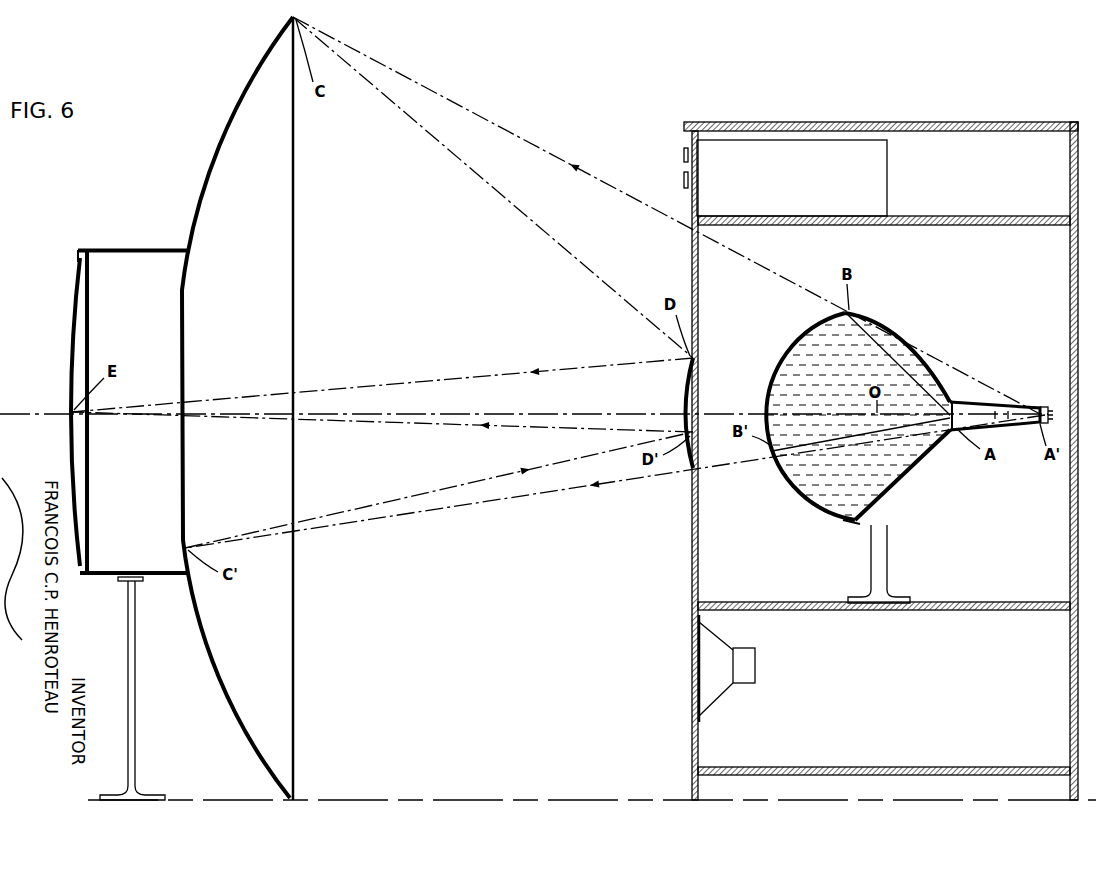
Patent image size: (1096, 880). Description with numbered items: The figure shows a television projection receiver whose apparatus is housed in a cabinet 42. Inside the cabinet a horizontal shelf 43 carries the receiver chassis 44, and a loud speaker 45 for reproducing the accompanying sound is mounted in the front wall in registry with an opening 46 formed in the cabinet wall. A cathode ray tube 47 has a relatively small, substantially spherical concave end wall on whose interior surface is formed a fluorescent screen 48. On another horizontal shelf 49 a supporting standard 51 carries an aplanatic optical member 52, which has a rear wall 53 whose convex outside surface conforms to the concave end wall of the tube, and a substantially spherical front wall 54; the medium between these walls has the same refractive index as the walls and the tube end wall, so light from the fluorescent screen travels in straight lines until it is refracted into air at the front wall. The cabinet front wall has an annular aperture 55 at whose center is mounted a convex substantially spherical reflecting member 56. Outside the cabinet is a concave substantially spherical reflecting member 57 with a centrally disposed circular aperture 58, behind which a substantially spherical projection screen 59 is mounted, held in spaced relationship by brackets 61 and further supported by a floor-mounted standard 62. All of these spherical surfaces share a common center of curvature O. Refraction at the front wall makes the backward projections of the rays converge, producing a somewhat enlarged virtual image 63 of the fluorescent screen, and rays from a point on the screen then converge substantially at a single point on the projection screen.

The cabinet 42 is at (879, 121).
The horizontal shelf 43 is at (996, 217).
The receiver chassis 44 is at (880, 197).
The loud speaker 45 is at (728, 690).
The opening 46 is at (692, 648).
The cathode ray tube 47 is at (983, 402).
The fluorescent screen 48 is at (955, 400).
The horizontal shelf 49 is at (1015, 610).
The supporting standard 51 is at (871, 549).
The aplanatic optical member 52 is at (860, 311).
The rear wall 53 is at (930, 466).
The front wall 54 is at (798, 490).
The annular aperture 55 is at (692, 277).
The convex reflecting member 56 is at (686, 398).
The concave reflecting member 57 is at (293, 213).
The circular aperture 58 is at (184, 327).
The projection screen 59 is at (70, 314).
The bracket 61 is at (116, 247).
The standard 62 is at (136, 745).
The virtual image 63 is at (1037, 397).